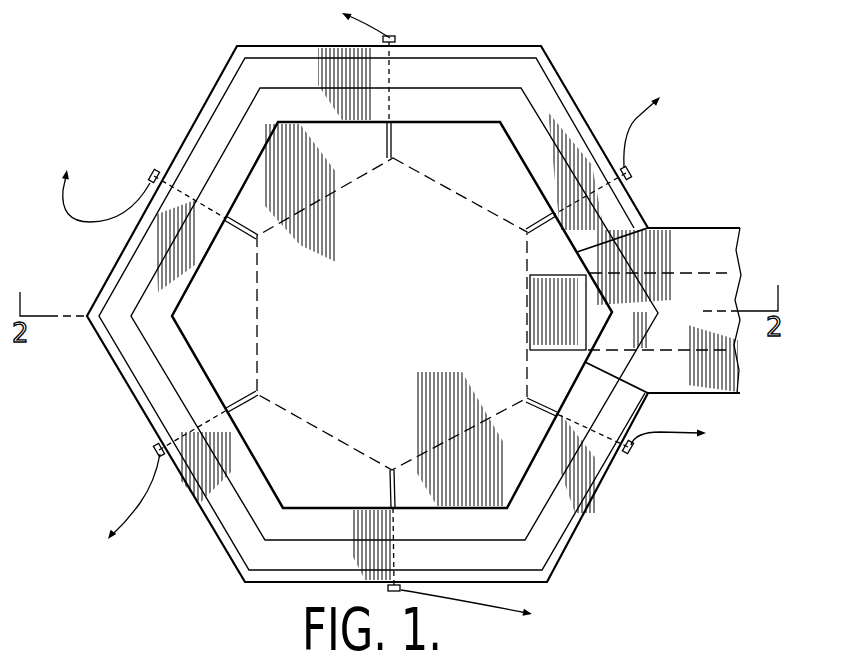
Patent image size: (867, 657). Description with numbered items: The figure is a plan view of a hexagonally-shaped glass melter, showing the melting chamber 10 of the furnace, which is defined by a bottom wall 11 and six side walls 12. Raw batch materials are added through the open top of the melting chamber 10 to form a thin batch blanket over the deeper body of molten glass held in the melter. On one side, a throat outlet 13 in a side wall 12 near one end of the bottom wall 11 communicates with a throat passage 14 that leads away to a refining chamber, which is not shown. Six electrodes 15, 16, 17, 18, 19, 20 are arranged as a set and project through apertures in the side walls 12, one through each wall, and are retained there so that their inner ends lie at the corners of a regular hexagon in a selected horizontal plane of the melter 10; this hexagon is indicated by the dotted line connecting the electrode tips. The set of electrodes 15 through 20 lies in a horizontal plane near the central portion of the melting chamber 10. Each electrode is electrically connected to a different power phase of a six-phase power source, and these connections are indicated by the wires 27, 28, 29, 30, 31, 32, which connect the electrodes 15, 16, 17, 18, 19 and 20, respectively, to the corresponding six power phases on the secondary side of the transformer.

The melting chamber 10 is at (367, 313).
The bottom wall 11 is at (470, 140).
The side walls 12 is at (433, 68).
The throat outlet 13 is at (586, 272).
The throat passage 14 is at (687, 288).
The electrode 15 is at (237, 220).
The electrode 16 is at (395, 38).
The electrode 17 is at (633, 172).
The electrode 18 is at (629, 455).
The electrode 19 is at (388, 590).
The electrode 20 is at (156, 449).
The wire 27 is at (71, 215).
The wire 28 is at (365, 21).
The wire 29 is at (657, 114).
The wire 30 is at (688, 434).
The wire 31 is at (500, 608).
The wire 32 is at (123, 522).